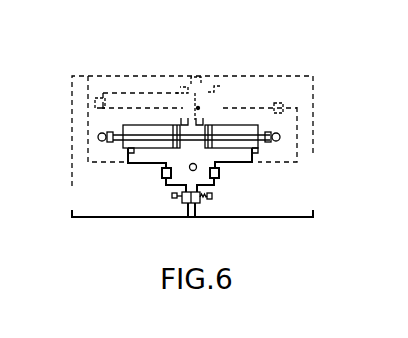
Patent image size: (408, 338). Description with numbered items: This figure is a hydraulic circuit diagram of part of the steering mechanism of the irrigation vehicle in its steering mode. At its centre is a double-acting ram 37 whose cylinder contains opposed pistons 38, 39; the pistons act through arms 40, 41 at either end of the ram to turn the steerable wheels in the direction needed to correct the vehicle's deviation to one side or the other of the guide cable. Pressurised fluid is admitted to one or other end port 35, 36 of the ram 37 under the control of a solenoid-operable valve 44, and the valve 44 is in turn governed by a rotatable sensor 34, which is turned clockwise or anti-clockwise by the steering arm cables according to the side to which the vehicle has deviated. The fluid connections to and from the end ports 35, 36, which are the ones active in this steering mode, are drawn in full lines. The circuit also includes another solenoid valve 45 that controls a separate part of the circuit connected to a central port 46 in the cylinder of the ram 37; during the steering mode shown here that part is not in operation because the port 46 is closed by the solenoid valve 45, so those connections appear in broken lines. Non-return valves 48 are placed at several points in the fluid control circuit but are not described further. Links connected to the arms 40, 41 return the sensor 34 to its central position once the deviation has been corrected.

The rotatable sensor 34 is at (190, 171).
The end port 35 is at (127, 149).
The end port 36 is at (257, 151).
The double-acting ram 37 is at (183, 119).
The piston 38 is at (142, 126).
The piston 39 is at (240, 127).
The arm 40 is at (98, 137).
The arm 41 is at (280, 136).
The solenoid-operable valve 44 is at (205, 204).
The solenoid valve 45 is at (197, 76).
The central port 46 is at (202, 119).
The non-return valve 48 is at (100, 97).